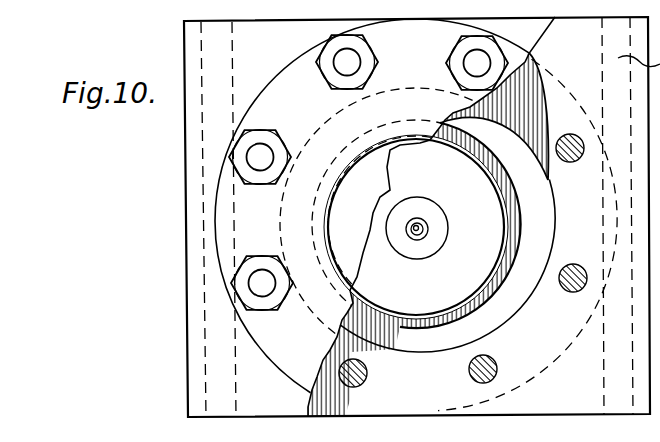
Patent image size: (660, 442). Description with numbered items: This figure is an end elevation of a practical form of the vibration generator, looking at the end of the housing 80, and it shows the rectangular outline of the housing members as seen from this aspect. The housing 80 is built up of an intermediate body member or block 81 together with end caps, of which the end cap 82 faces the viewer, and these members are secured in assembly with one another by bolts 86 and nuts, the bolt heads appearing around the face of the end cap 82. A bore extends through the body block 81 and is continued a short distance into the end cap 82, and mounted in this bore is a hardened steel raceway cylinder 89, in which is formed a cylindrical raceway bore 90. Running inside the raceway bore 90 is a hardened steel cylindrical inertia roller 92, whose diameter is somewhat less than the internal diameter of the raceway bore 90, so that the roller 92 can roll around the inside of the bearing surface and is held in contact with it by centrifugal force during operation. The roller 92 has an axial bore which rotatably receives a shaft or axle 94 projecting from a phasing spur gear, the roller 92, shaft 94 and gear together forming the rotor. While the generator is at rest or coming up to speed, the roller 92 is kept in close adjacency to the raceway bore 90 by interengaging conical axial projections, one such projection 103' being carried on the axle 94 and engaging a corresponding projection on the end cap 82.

The housing 80 is at (188, 369).
The intermediate body member or block 81 is at (582, 400).
The end cap 82 is at (300, 80).
The bolts 86 is at (485, 46).
The raceway cylinder 89 is at (521, 305).
The raceway bore 90 is at (480, 150).
The inertia roller 92 is at (416, 227).
The shaft or axle 94 is at (430, 212).
The conical axial projection 103' is at (414, 256).